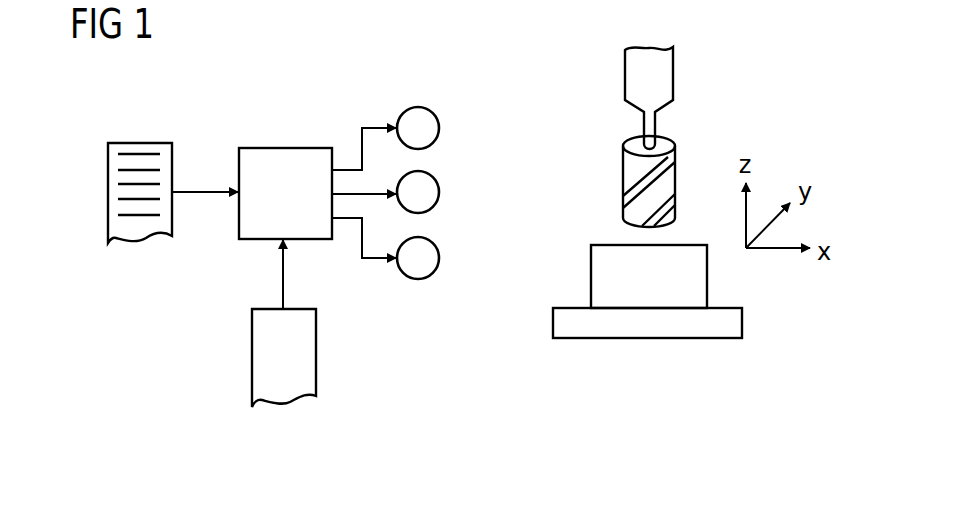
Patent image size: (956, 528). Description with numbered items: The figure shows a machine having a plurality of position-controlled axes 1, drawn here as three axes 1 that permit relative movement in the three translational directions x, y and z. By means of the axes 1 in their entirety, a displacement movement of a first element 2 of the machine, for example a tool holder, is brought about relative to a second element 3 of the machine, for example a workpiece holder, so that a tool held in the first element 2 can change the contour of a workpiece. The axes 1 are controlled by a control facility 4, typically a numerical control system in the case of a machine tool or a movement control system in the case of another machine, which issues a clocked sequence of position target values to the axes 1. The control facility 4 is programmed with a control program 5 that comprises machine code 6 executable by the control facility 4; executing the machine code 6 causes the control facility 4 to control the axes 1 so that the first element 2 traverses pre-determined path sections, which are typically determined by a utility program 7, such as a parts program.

The position-controlled axes 1 is at (440, 128).
The first element 2 is at (673, 78).
The second element 3 is at (645, 338).
The control facility 4 is at (290, 148).
The control program 5 is at (138, 243).
The machine code 6 is at (128, 199).
The utility program 7 is at (316, 357).